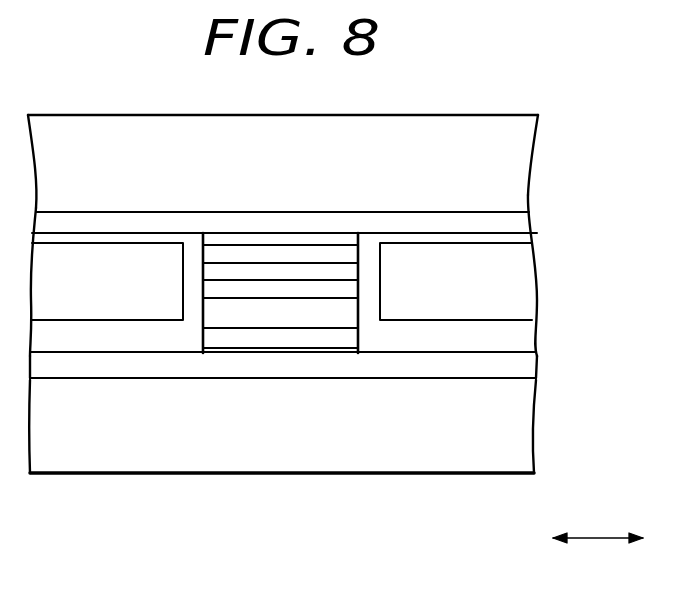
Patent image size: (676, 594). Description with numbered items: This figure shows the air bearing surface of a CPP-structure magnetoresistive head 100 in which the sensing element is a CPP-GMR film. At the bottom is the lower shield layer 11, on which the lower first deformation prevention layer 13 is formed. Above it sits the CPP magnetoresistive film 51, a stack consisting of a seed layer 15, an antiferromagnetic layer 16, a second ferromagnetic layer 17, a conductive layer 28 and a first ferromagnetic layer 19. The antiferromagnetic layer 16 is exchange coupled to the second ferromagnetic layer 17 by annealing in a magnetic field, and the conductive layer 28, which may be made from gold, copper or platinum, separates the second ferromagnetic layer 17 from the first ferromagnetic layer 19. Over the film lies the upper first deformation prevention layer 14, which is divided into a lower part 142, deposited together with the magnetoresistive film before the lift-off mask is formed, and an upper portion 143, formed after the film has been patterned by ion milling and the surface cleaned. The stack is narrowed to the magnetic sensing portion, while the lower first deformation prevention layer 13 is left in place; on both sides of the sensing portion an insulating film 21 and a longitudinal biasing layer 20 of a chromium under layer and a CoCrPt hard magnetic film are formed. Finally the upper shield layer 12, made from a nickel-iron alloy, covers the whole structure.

The magnetoresistive device / track width direction 100 is at (597, 537).
The lower shield layer 11 is at (66, 455).
The upper shield layer 12 is at (98, 130).
The lower first deformation prevention layer 13 is at (232, 365).
The upper first deformation prevention layer 14 is at (382, 160).
The lower part of upper first deformation prevention layer 142 is at (308, 238).
The upper portion of upper first deformation prevention layer 143 is at (359, 223).
The seed layer 15 is at (272, 340).
The antiferromagnetic layer 16 is at (310, 318).
The second ferromagnetic layer 17 is at (333, 290).
The first ferromagnetic layer 19 is at (253, 248).
The longitudinal biasing layer 20 is at (72, 260).
The insulating film 21 is at (148, 237).
The conductive layer 28 is at (222, 270).
The CPP magnetoresistive film 51 is at (257, 294).